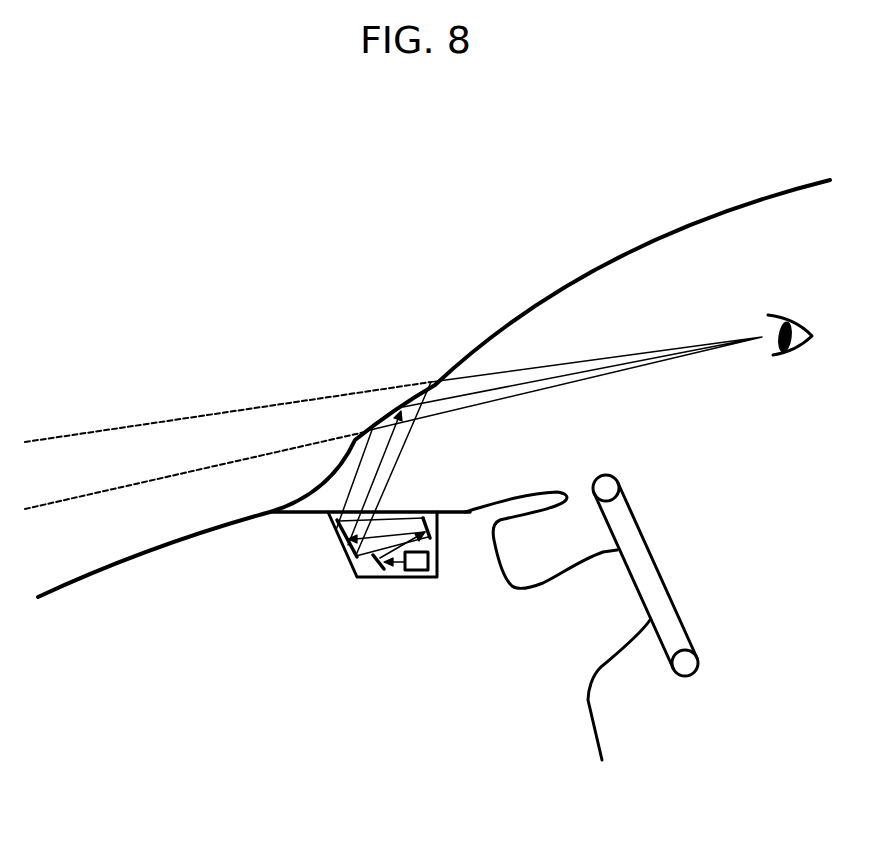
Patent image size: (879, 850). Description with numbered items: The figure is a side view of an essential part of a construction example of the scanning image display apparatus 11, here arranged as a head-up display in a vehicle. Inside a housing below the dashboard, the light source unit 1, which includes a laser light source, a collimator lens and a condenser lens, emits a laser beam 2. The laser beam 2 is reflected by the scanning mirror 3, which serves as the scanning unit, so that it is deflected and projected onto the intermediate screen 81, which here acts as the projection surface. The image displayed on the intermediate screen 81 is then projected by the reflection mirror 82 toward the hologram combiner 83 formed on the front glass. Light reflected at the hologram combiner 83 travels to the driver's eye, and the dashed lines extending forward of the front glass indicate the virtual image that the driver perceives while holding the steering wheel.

The light source unit 1 is at (414, 571).
The laser beam 2 is at (374, 473).
The scanning mirror 3 is at (375, 556).
The scanning image display apparatus 11 is at (397, 578).
The intermediate screen 81 is at (429, 516).
The reflection mirror 82 is at (330, 543).
The hologram combiner 83 is at (396, 411).